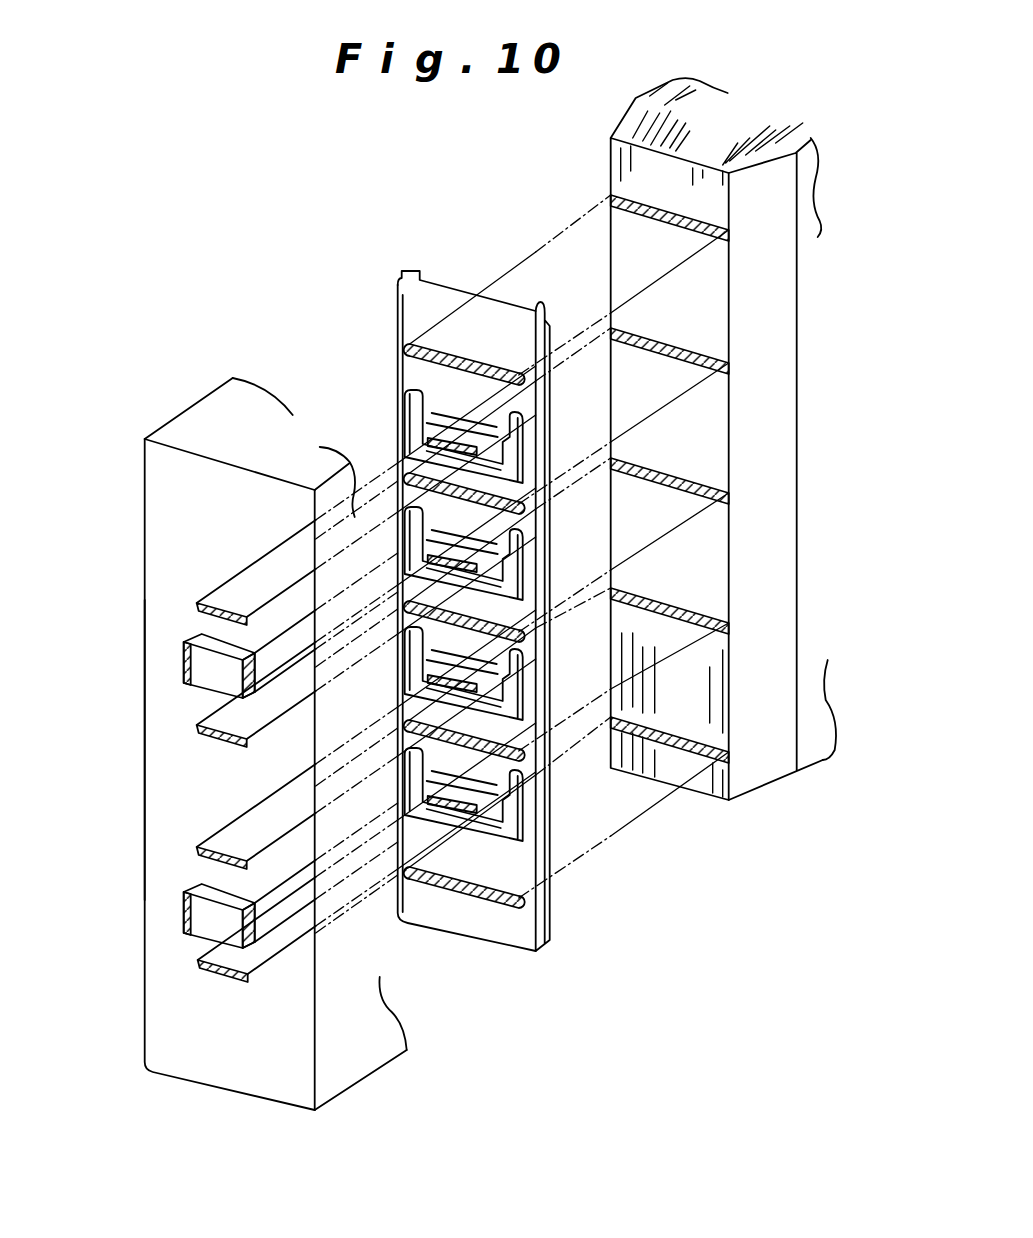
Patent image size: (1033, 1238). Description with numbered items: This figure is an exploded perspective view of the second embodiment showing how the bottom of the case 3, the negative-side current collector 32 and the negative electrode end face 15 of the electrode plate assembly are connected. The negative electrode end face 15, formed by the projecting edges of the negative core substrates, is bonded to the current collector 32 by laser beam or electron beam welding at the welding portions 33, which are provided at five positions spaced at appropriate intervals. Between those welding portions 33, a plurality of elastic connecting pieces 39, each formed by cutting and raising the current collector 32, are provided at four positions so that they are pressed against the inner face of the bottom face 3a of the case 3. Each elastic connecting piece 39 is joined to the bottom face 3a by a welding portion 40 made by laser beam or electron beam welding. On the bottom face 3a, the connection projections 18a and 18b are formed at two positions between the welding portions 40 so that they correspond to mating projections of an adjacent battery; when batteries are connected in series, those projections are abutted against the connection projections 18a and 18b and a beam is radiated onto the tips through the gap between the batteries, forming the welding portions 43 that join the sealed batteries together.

The case 3 is at (239, 708).
The bottom face of the case 3a is at (183, 520).
The negative electrode end face 15 is at (631, 165).
The connection projection 18a is at (210, 683).
The connection projection 18b is at (210, 923).
The current collector 32 is at (420, 302).
The welding portion 33 is at (633, 223).
The elastic connecting piece 39 is at (400, 452).
The welding portion 40 is at (232, 603).
The welding portion 43 is at (185, 655).